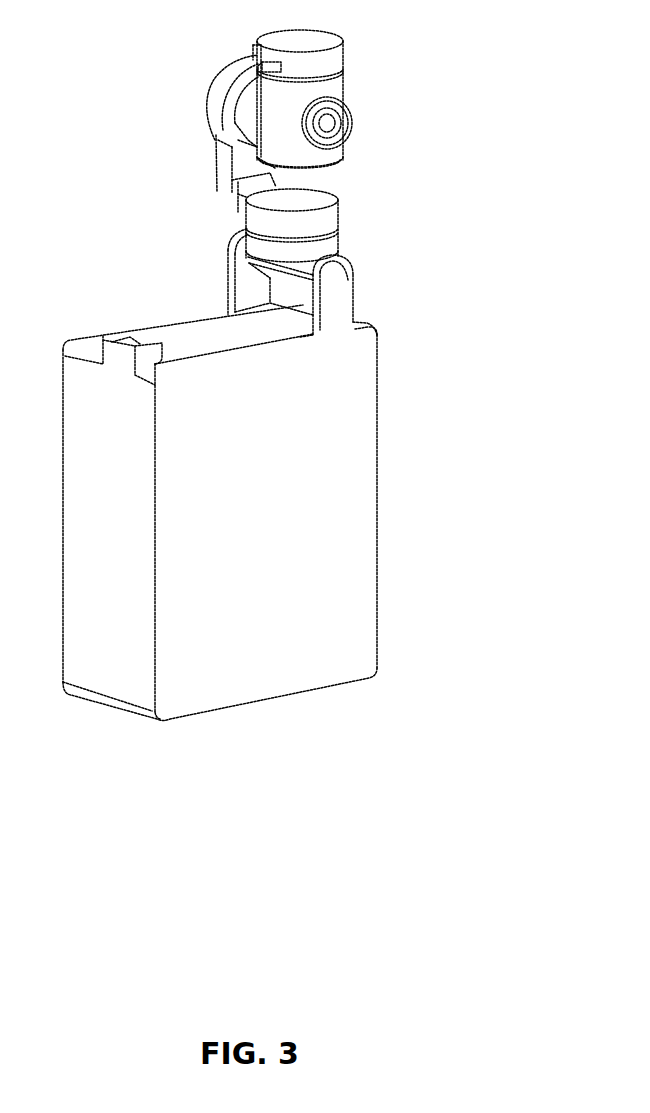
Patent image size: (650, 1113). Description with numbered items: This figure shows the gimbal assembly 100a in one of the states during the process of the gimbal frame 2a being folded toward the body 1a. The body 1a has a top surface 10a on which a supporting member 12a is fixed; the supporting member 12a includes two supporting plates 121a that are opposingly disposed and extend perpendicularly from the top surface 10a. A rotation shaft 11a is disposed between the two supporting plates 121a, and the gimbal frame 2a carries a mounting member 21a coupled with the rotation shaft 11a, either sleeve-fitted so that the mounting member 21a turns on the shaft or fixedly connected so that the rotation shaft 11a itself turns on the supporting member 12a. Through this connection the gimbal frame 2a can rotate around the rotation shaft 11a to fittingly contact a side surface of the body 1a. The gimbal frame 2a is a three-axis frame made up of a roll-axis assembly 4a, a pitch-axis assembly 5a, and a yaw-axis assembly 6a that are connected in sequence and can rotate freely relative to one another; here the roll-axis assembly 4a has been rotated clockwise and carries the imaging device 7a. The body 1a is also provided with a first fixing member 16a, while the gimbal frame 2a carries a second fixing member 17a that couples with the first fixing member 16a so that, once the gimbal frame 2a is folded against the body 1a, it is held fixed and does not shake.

The gimbal assembly 100a is at (141, 31).
The body 1a is at (343, 543).
The top surface 10a is at (207, 333).
The first fixing member 16a is at (124, 334).
The rotation shaft 11a is at (306, 275).
The mounting member 21a is at (233, 250).
The supporting member 12a is at (340, 285).
The supporting plates 121a is at (334, 296).
The yaw-axis assembly 6a is at (323, 222).
The gimbal frame 2a is at (227, 168).
The pitch-axis assembly 5a is at (245, 110).
The roll-axis assembly 4a is at (333, 64).
The second fixing member 17a is at (268, 68).
The imaging device 7a is at (331, 124).